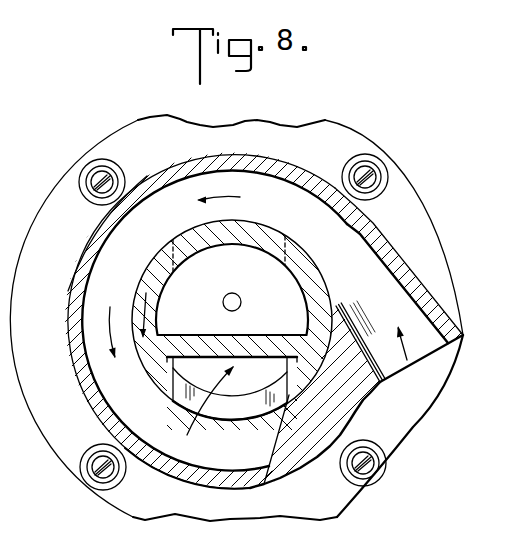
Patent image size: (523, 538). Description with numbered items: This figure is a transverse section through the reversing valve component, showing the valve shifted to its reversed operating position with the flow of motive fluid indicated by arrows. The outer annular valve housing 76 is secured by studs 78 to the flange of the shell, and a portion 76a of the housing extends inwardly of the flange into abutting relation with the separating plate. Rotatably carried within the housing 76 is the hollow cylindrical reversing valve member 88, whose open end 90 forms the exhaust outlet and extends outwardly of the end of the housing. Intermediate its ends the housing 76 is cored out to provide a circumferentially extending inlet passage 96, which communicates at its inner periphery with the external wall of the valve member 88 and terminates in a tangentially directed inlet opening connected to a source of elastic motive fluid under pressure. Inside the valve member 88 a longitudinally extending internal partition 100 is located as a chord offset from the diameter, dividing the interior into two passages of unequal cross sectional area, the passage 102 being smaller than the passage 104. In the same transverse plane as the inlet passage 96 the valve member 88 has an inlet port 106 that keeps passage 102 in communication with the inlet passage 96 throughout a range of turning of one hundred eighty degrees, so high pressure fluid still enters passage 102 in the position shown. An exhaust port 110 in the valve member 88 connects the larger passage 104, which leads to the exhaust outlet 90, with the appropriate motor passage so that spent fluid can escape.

The annular valve housing 76 is at (186, 139).
The inwardly extending portion of the valve housing 76a is at (380, 310).
The studs 78 is at (384, 164).
The hollow cylindrical reversing valve member 88 is at (327, 280).
The open end of the valve member 90 is at (438, 343).
The inlet passage 96 is at (170, 224).
The internal partition 100 is at (287, 316).
The valve passage 102 is at (223, 383).
The valve passage 104 is at (253, 277).
The inlet port 106 is at (250, 414).
The exhaust port 110 is at (232, 232).